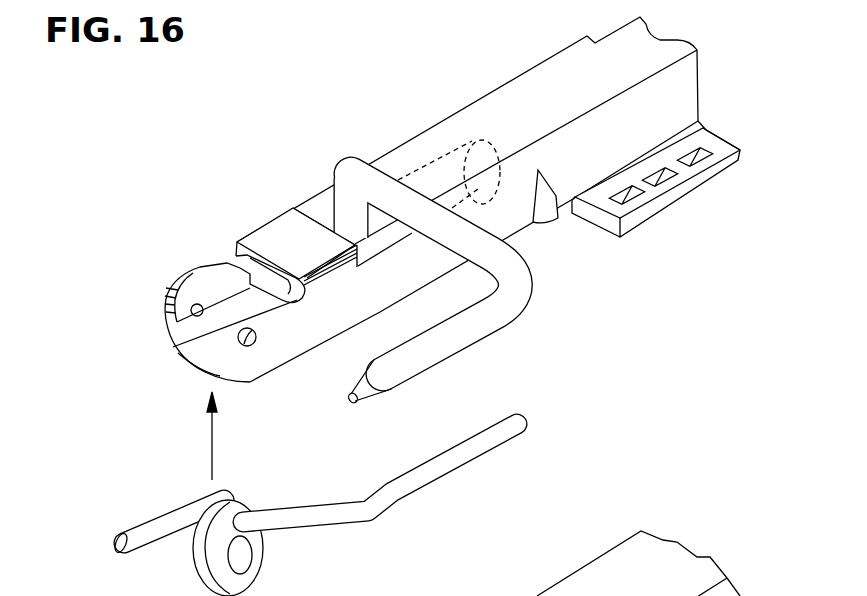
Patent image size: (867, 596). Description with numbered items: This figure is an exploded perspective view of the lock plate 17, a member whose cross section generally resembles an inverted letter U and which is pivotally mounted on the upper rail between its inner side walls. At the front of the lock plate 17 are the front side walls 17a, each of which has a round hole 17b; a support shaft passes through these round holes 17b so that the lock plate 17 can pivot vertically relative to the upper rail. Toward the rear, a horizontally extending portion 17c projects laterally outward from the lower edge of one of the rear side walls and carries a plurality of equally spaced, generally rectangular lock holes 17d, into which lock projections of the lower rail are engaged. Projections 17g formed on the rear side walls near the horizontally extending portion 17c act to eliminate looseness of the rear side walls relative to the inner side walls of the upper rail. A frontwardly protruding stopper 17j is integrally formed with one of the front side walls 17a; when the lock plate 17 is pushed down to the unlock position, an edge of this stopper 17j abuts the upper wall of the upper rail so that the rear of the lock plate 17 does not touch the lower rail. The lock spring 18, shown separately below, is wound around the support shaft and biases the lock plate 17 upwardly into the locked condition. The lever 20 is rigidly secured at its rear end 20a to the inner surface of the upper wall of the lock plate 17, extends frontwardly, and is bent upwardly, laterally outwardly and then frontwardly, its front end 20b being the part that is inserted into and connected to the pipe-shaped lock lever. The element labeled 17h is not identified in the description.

The lock plate 17 is at (407, 145).
The front side walls 17a is at (193, 280).
The round hole 17b is at (247, 346).
The horizontally extending portion 17c is at (682, 202).
The lock holes 17d is at (700, 150).
The projections 17g is at (550, 215).
The lower arm 17h is at (315, 318).
The frontwardly protruding stopper 17j is at (170, 347).
The lock spring 18 is at (290, 518).
The lever 20 is at (345, 190).
The rear end 20a is at (467, 150).
The front end 20b is at (432, 358).